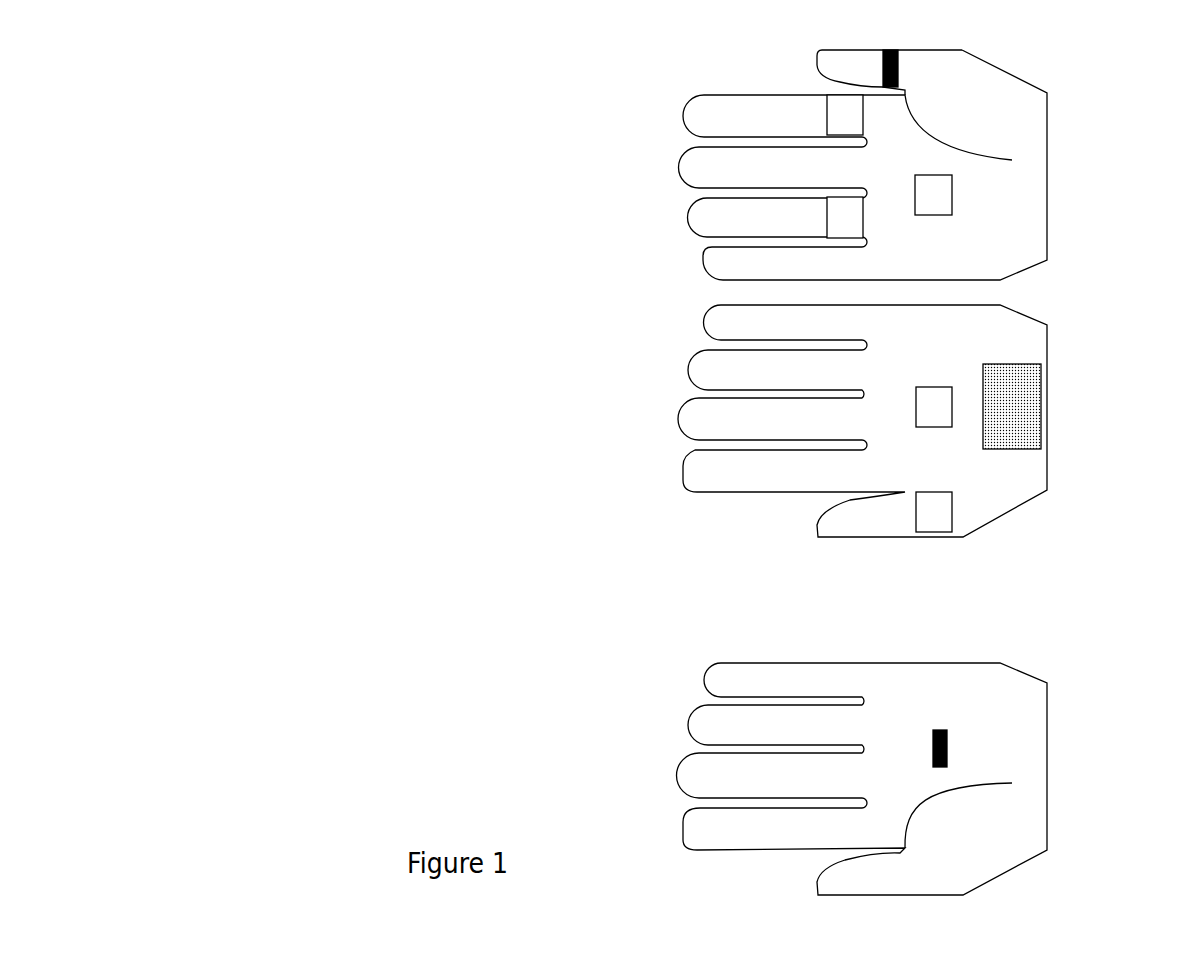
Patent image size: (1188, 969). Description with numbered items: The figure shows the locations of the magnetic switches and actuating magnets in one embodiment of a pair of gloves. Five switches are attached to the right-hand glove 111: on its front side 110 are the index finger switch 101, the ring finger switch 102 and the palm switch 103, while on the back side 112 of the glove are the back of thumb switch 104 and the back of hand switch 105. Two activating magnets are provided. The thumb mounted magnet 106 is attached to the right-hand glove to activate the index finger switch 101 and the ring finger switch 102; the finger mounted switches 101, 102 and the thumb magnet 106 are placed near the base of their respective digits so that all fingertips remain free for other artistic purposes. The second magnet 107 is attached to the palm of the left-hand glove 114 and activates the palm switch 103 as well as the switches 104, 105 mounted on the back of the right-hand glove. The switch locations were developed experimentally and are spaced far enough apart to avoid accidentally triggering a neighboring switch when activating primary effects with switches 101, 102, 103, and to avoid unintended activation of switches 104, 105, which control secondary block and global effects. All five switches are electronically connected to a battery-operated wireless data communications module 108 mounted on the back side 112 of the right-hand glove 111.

The index finger switch 101 is at (827, 113).
The ring finger switch 102 is at (863, 213).
The palm switch 103 is at (952, 193).
The back of thumb switch 104 is at (952, 512).
The back of hand switch 105 is at (937, 387).
The thumb mounted magnet 106 is at (898, 65).
The palm magnet 107 is at (947, 748).
The wireless data communications module 108 is at (1028, 395).
The front side of the right-hand glove 110 is at (1040, 67).
The right-hand glove 111 is at (690, 228).
The back side of the right-hand glove 112 is at (1060, 350).
The left-hand glove 114 is at (1058, 698).